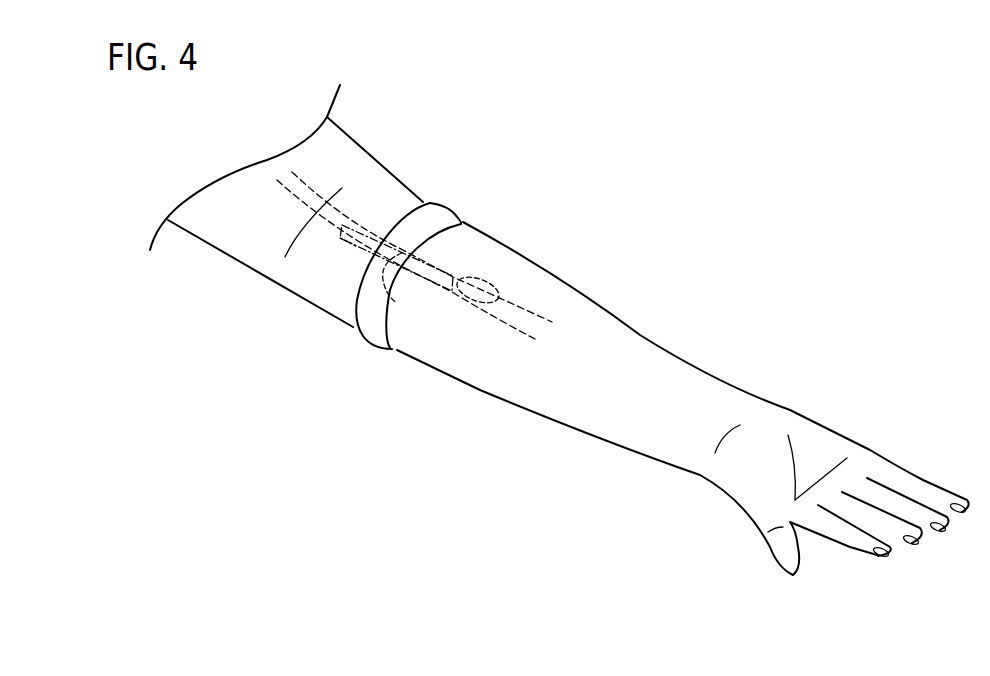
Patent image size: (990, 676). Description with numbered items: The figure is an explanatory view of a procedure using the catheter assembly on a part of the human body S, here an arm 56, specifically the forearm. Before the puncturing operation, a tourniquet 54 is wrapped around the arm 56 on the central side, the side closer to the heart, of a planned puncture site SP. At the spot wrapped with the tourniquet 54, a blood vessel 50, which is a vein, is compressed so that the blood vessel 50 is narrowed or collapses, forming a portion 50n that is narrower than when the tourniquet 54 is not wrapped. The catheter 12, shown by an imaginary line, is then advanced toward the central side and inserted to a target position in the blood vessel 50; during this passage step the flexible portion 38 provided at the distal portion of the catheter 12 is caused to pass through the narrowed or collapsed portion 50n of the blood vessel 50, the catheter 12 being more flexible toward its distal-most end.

The subject (user's body / arm) S is at (253, 306).
The catheter 12 is at (355, 220).
The flexible portion 38 is at (350, 248).
The blood vessel 50 is at (527, 308).
The portion of the blood vessel 50n is at (397, 303).
The tourniquet 54 is at (440, 202).
The arm 56 is at (627, 362).
The planned puncture site SP is at (479, 279).